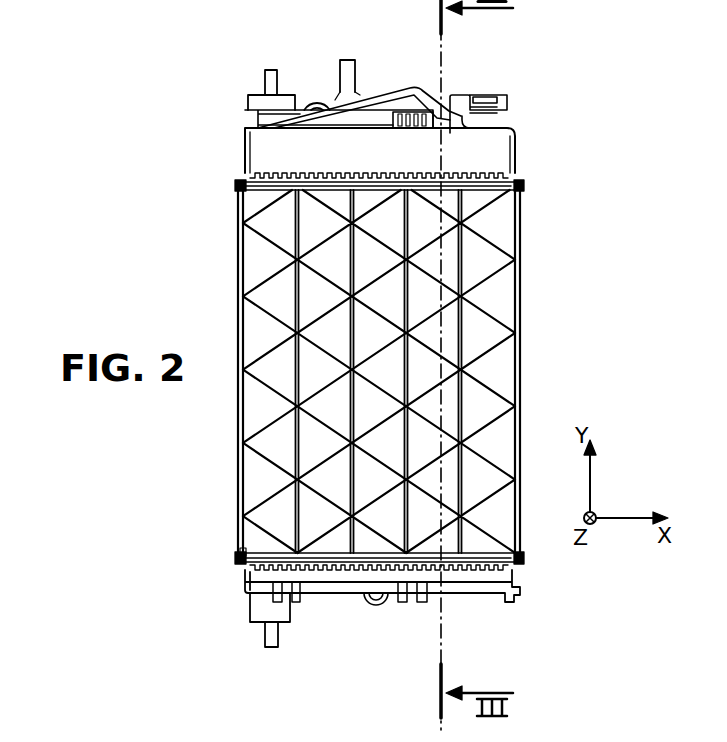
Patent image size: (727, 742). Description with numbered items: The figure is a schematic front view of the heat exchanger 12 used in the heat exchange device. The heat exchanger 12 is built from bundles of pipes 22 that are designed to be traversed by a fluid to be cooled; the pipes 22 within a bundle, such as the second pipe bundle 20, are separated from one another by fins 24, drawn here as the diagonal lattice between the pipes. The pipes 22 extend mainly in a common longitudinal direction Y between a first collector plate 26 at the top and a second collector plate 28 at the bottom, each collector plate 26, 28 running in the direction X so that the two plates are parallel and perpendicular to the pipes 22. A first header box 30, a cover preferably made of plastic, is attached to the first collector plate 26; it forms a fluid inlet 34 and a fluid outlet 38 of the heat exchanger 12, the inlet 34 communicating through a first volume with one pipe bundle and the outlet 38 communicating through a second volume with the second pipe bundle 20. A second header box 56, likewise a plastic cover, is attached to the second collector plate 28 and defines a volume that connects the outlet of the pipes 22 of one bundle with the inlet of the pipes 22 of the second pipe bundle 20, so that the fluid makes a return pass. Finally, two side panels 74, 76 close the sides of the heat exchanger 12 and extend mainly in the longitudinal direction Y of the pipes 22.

The heat exchanger 12 is at (207, 135).
The second pipe bundle 20 is at (492, 305).
The pipes 22 is at (297, 458).
The fins 24 is at (243, 527).
The first collector plate 26 is at (488, 183).
The second collector plate 28 is at (517, 568).
The first header box 30 is at (493, 153).
The fluid inlet 34 is at (362, 88).
The fluid outlet 38 is at (412, 87).
The second header box 56 is at (497, 590).
The side panel 74 is at (238, 242).
The side panel 76 is at (518, 367).